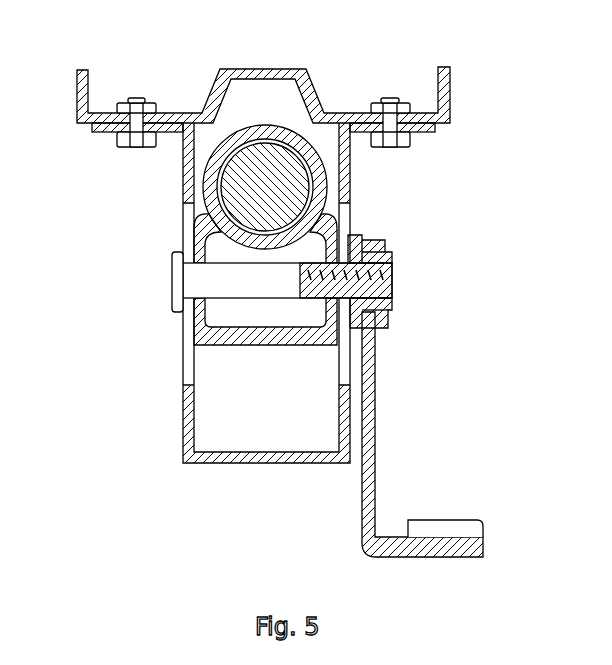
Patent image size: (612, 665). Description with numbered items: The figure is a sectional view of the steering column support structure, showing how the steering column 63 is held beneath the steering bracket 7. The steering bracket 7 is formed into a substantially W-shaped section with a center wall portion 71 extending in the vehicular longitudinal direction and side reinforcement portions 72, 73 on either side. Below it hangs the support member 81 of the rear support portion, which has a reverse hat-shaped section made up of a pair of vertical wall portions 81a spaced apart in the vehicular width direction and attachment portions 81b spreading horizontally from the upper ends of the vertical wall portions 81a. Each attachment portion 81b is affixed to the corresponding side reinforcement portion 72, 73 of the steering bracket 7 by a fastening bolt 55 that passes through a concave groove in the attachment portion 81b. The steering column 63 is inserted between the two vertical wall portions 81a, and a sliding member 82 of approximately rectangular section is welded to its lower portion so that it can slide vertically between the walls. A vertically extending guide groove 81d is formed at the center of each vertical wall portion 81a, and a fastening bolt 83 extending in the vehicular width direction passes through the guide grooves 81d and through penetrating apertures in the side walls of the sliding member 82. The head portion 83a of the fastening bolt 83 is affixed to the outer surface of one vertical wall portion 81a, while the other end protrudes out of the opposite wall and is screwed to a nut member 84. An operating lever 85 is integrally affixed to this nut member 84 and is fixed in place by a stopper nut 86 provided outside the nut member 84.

The steering bracket 7 is at (260, 95).
The center wall portion 71 is at (271, 69).
The side reinforcement portion 72 is at (448, 124).
The side reinforcement portion 73 is at (76, 105).
The fastening bolt 55 is at (136, 148).
The support member 81 is at (265, 324).
The vertical wall portion 81a is at (184, 427).
The attachment portion 81b is at (100, 133).
The guide groove 81d is at (184, 383).
The steering column 63 is at (258, 126).
The sliding member 82 is at (237, 347).
The fastening bolt 83 is at (246, 298).
The head portion 83a is at (172, 262).
The nut member 84 is at (355, 234).
The stopper nut 86 is at (391, 318).
The operating lever 85 is at (377, 443).